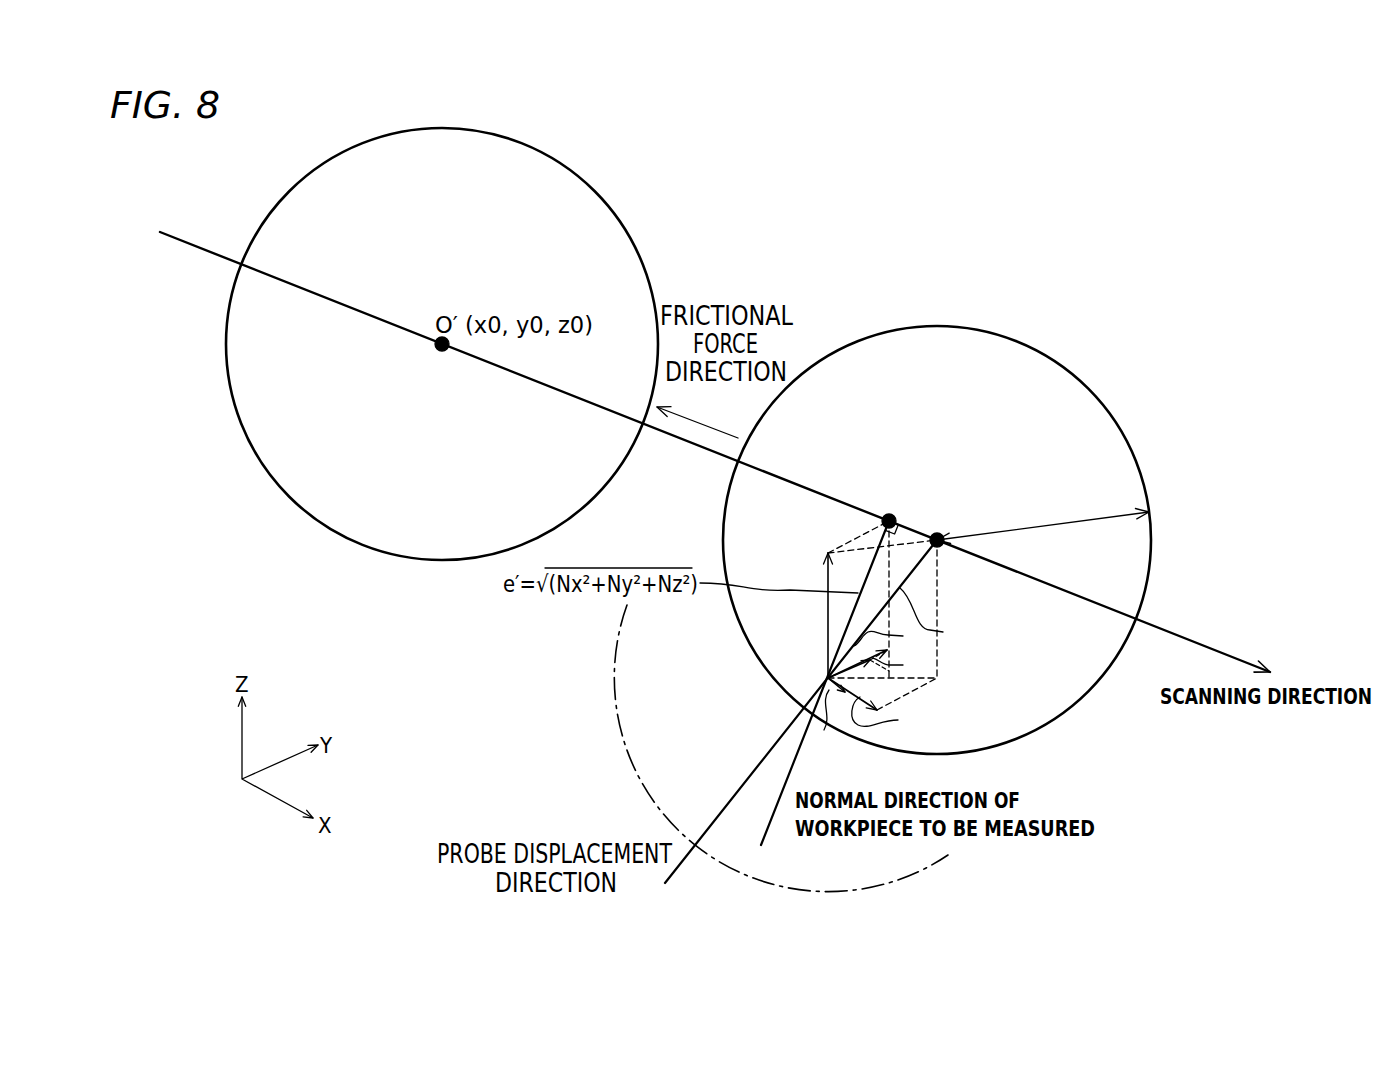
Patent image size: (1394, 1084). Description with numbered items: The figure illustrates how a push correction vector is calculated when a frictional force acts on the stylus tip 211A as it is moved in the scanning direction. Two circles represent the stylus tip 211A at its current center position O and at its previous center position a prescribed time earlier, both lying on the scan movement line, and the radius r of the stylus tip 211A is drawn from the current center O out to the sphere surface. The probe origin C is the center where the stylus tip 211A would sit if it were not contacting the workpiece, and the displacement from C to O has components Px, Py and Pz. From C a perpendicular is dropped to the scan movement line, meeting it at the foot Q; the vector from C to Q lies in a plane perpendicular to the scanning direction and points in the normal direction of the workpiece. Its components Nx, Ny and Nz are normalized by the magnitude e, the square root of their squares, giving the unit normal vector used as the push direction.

The stylus tip 211A is at (633, 235).
The current center position of the stylus tip O is at (936, 536).
The foot of the perpendicular from the probe origin Q is at (887, 511).
The radius of the stylus tip r is at (1043, 532).
The probe origin C is at (867, 640).
The magnitude of the normal vector e is at (1125, 616).